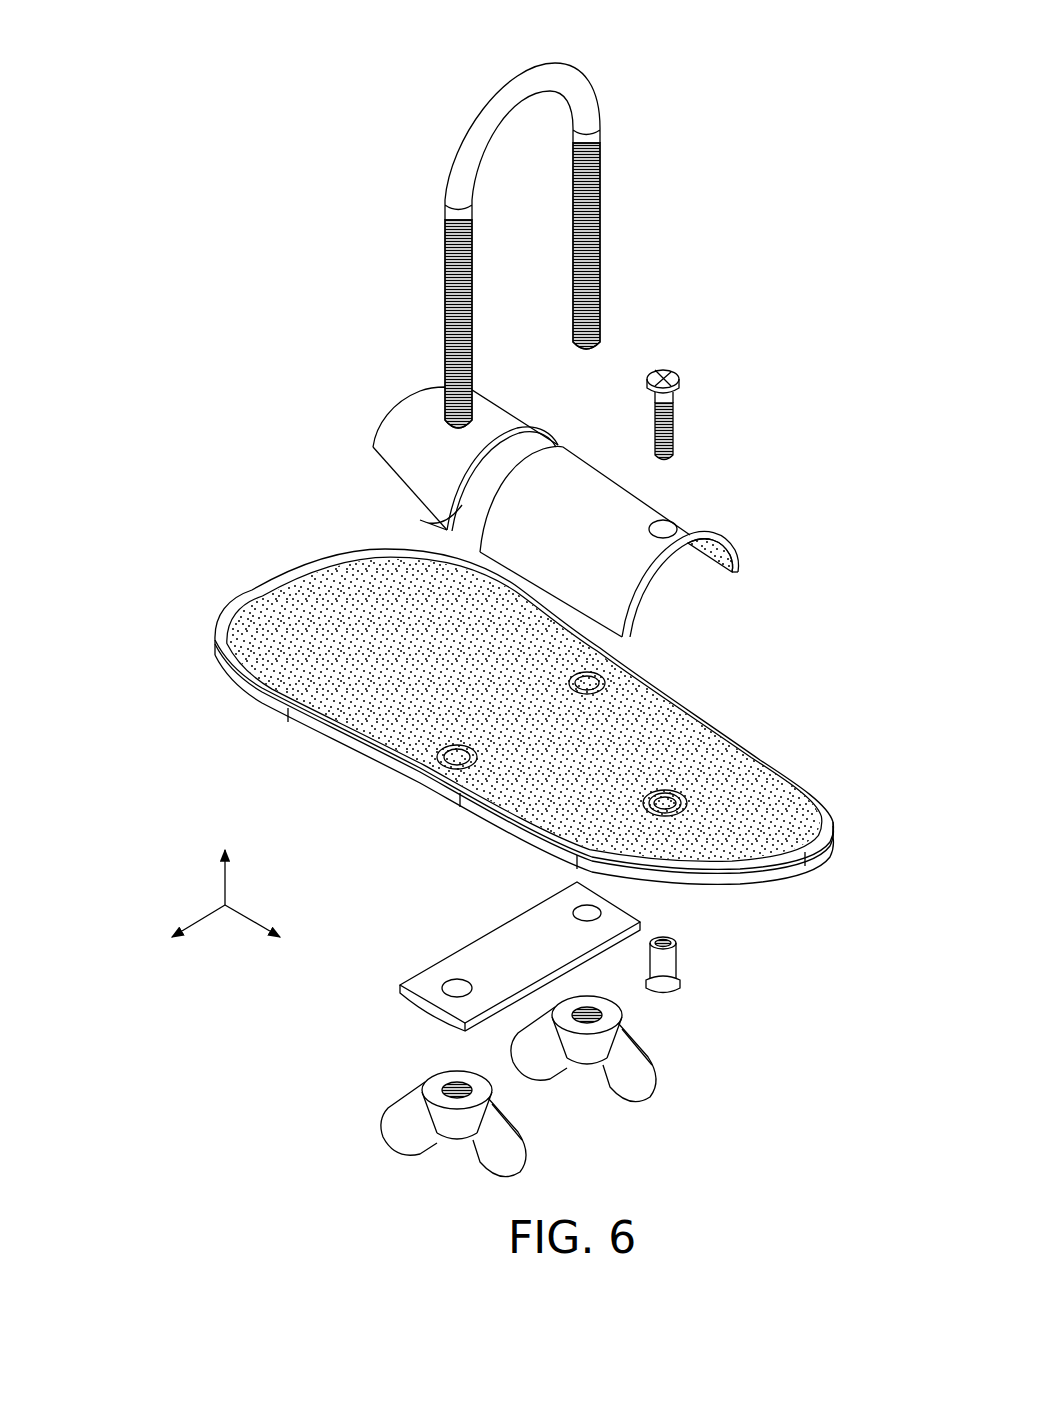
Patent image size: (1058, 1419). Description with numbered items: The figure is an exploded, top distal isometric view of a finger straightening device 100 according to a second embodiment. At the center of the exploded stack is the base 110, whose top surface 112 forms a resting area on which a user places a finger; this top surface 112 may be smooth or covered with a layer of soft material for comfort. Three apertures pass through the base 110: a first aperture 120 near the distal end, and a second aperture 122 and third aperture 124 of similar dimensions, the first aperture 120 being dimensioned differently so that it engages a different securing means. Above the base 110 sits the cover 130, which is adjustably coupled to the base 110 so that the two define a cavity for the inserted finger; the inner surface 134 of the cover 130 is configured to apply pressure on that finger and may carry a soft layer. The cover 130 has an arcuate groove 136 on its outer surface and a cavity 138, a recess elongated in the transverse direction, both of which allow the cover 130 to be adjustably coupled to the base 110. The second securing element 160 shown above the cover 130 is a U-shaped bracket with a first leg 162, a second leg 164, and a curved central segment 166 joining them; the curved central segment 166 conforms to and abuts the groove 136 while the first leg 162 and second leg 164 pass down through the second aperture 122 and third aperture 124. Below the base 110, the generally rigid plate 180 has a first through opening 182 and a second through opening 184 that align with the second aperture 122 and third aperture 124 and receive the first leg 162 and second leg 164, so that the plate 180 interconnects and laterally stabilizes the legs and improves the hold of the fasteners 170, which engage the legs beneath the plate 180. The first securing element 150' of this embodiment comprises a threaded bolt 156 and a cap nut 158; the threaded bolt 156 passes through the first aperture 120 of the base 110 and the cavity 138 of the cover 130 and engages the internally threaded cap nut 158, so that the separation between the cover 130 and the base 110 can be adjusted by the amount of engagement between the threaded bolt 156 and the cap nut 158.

The finger straightening device 100 is at (303, 224).
The base 110 is at (225, 702).
The top surface 112 is at (285, 630).
The first aperture 120 is at (665, 803).
The second aperture 122 is at (457, 757).
The third aperture 124 is at (587, 685).
The cover 130 is at (352, 462).
The inner surface 134 is at (703, 557).
The groove 136 is at (450, 519).
The cavity 138 is at (668, 527).
The first securing element 150' is at (726, 397).
The threaded bolt 156 is at (692, 425).
The cap nut 158 is at (690, 960).
The second securing element 160 is at (642, 172).
The first leg 162 is at (445, 322).
The second leg 164 is at (600, 272).
The curved central segment 166 is at (510, 92).
The fasteners 170 is at (590, 1092).
The plate 180 is at (412, 1020).
The first through opening 182 is at (457, 990).
The second through opening 184 is at (587, 915).